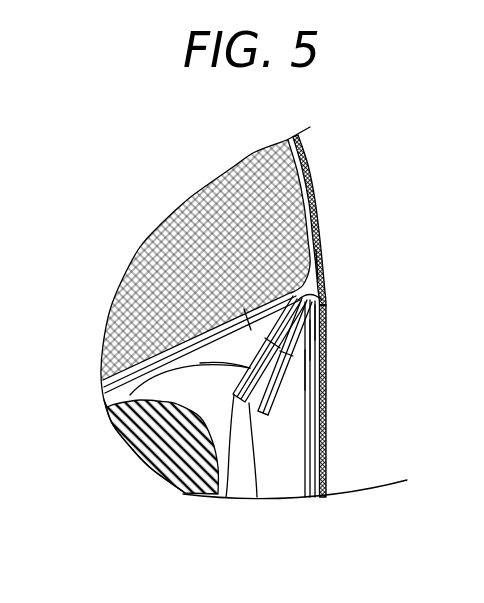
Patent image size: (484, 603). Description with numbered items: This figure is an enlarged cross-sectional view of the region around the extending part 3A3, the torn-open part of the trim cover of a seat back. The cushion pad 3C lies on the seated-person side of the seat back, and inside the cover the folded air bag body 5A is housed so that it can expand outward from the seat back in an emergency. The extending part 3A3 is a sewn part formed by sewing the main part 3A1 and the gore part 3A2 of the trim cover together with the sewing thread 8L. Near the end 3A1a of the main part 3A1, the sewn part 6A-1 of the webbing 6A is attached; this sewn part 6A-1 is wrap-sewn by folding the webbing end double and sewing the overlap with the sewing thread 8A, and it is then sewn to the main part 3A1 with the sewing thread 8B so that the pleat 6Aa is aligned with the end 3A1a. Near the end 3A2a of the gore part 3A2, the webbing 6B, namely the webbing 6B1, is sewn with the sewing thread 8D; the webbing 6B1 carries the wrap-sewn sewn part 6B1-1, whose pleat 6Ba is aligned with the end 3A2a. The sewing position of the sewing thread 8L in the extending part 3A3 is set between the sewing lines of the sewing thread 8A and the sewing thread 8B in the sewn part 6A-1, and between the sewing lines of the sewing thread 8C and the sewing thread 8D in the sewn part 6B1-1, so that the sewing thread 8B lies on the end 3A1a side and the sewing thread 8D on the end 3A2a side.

The cushion pad 3C is at (197, 224).
The main part 3A1 is at (310, 181).
The gore part 3A2 is at (326, 392).
The extending part 3A3 is at (315, 298).
The end of the main part 3A1a is at (226, 497).
The end of the gore part 3A2a is at (257, 497).
The air bag body 5A is at (148, 463).
The webbing 6A is at (110, 413).
The sewn part 6A-1 is at (160, 371).
The pleat 6Aa is at (233, 403).
The webbing 6B is at (295, 425).
The webbing 6B1 is at (300, 476).
The sewn part 6B1-1 is at (296, 418).
The pleat 6Ba is at (262, 424).
The sewing thread 8A is at (248, 325).
The sewing thread 8B is at (323, 317).
The sewing thread 8C is at (322, 370).
The sewing thread 8D is at (322, 337).
The sewing thread 8L is at (315, 260).